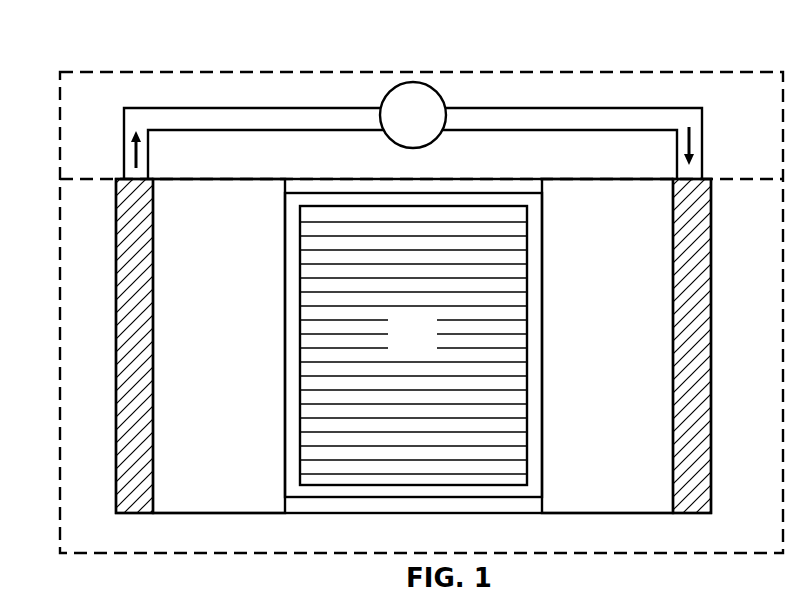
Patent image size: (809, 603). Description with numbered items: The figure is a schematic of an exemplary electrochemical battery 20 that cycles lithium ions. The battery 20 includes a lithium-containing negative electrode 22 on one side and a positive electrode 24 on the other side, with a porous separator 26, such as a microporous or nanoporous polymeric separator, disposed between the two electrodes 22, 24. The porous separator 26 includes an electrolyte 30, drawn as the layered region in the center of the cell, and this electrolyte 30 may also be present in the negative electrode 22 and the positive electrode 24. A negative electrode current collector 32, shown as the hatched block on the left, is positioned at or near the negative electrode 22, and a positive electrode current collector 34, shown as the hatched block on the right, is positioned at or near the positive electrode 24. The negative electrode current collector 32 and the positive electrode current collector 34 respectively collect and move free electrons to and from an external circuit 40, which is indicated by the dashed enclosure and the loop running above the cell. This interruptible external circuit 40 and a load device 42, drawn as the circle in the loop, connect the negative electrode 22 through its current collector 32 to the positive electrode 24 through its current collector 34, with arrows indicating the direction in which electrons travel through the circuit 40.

The battery 20 is at (46, 213).
The negative electrode 22 is at (228, 320).
The positive electrode 24 is at (619, 317).
The porous separator 26 is at (412, 497).
The electrolyte 30 is at (424, 344).
The negative electrode current collector 32 is at (115, 253).
The positive electrode current collector 34 is at (712, 248).
The external circuit 40 is at (258, 66).
The load device 42 is at (425, 126).